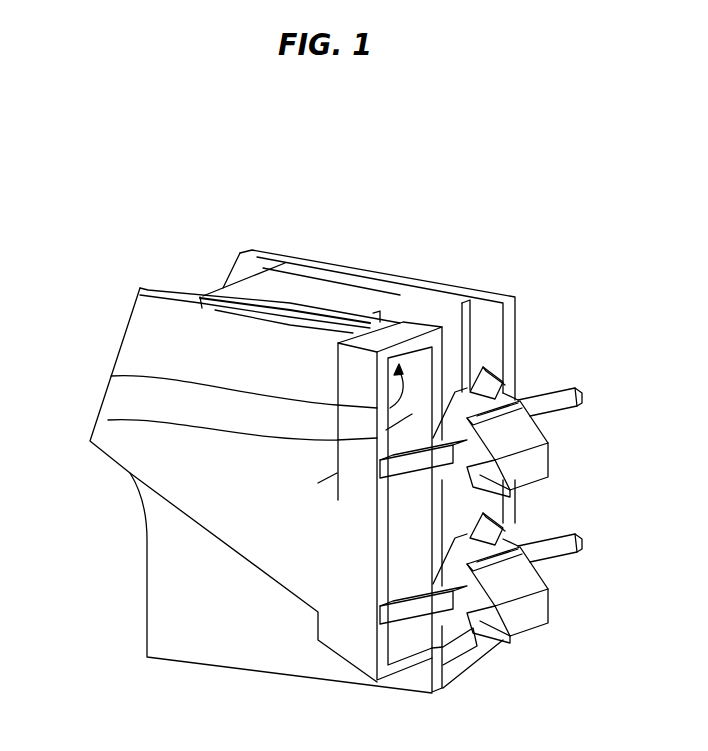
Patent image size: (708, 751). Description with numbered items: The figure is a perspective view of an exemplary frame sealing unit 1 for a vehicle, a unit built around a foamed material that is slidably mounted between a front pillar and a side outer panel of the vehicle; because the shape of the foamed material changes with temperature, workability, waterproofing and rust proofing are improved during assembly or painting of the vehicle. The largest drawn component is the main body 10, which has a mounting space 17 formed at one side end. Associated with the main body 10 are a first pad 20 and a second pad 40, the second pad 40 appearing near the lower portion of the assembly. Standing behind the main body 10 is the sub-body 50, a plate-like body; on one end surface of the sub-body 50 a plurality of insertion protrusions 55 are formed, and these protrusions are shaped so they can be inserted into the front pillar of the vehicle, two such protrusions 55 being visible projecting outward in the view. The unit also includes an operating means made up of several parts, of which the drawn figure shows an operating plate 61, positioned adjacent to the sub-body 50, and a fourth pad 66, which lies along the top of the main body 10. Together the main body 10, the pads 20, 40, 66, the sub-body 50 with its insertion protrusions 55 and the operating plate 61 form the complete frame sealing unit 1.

The frame sealing unit 1 is at (347, 132).
The main body 10 is at (148, 326).
The mounting space 17 is at (111, 376).
The first pad 20 is at (108, 420).
The second pad 40 is at (463, 659).
The sub-body 50 is at (510, 353).
The insertion protrusion 55 is at (530, 437).
The operating plate 61 is at (472, 330).
The fourth pad 66 is at (323, 301).